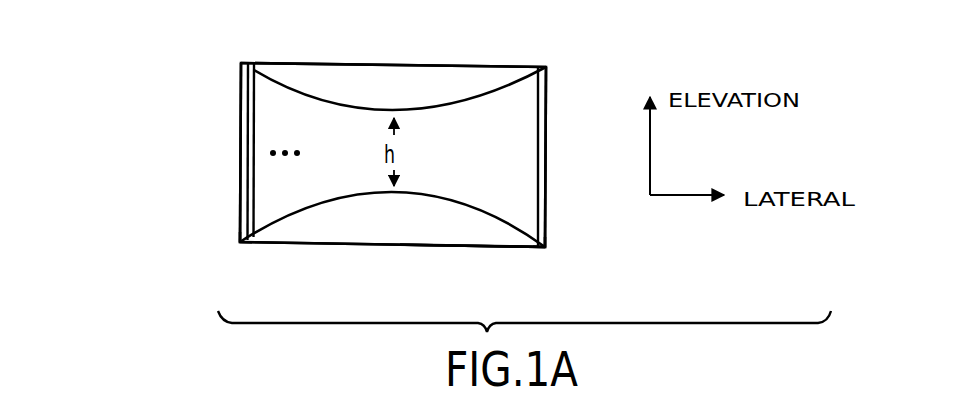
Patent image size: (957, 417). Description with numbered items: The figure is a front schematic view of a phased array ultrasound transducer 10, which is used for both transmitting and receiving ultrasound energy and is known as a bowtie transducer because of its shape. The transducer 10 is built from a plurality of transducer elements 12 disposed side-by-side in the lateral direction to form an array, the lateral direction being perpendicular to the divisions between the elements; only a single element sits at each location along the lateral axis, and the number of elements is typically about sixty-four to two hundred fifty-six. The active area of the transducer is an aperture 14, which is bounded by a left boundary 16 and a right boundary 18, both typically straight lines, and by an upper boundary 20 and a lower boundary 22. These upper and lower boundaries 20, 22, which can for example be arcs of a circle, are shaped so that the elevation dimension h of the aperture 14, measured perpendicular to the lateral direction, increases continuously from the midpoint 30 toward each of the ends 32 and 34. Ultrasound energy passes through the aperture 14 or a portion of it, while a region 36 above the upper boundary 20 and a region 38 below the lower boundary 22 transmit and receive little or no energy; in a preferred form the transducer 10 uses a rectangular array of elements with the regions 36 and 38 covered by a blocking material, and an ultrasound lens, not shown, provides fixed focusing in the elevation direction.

The phased array ultrasound transducer 10 is at (378, 50).
The transducer elements 12 is at (563, 137).
The aperture 14 is at (356, 166).
The left boundary 16 is at (238, 218).
The right boundary 18 is at (548, 183).
The upper boundary 20 is at (455, 111).
The lower boundary 22 is at (449, 197).
The midpoint 30 is at (383, 246).
The end 32 is at (240, 245).
The end 34 is at (547, 248).
The region above upper boundary 36 is at (462, 78).
The region below lower boundary 38 is at (446, 229).